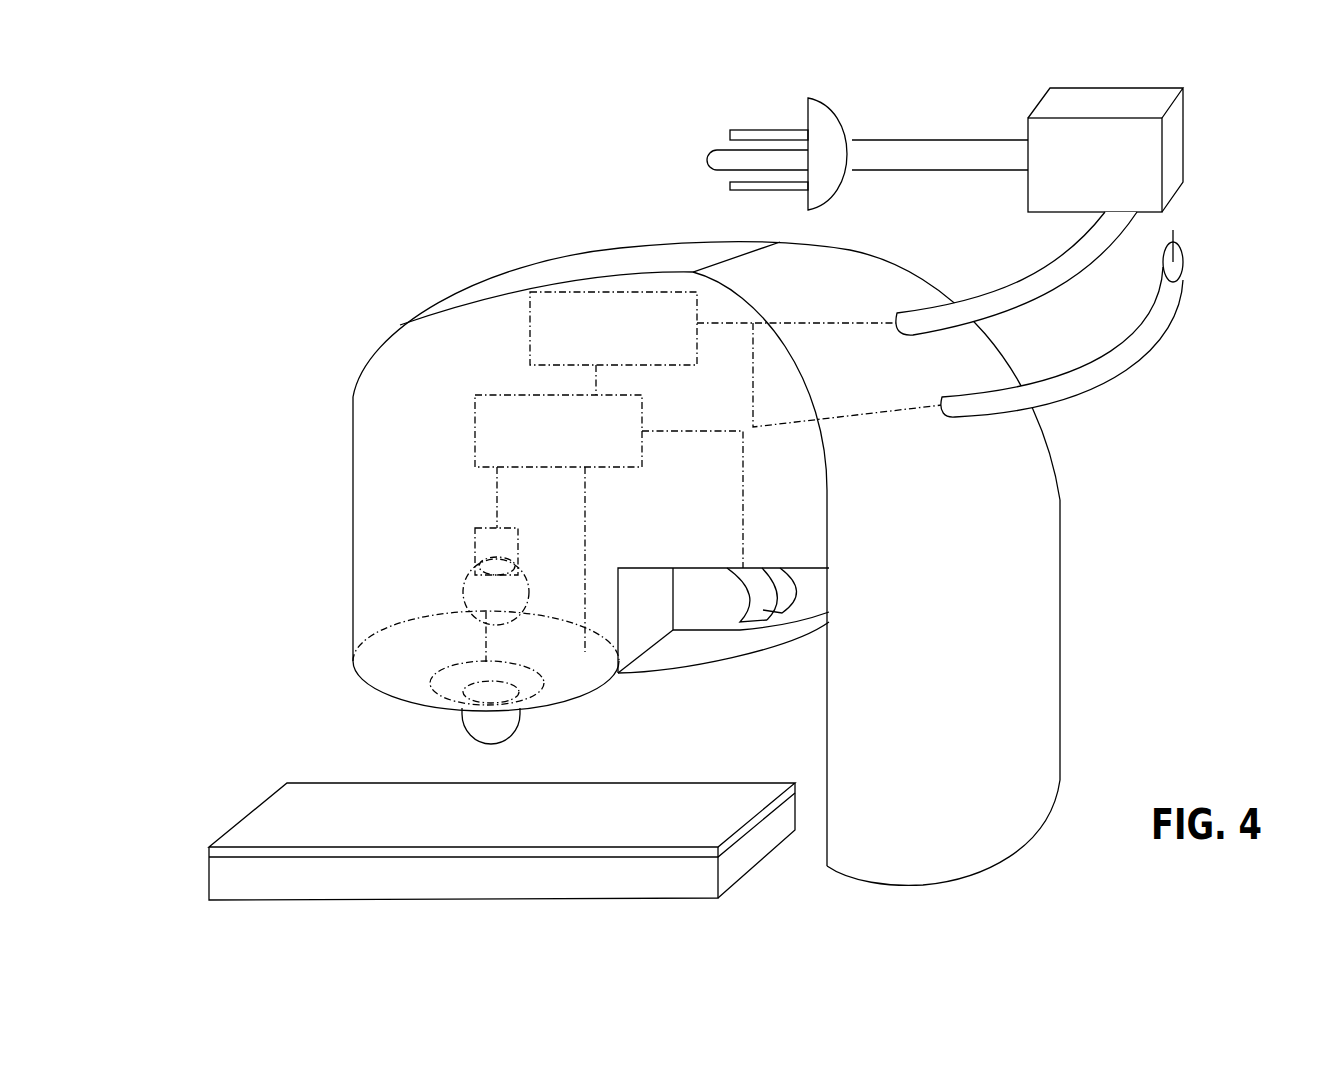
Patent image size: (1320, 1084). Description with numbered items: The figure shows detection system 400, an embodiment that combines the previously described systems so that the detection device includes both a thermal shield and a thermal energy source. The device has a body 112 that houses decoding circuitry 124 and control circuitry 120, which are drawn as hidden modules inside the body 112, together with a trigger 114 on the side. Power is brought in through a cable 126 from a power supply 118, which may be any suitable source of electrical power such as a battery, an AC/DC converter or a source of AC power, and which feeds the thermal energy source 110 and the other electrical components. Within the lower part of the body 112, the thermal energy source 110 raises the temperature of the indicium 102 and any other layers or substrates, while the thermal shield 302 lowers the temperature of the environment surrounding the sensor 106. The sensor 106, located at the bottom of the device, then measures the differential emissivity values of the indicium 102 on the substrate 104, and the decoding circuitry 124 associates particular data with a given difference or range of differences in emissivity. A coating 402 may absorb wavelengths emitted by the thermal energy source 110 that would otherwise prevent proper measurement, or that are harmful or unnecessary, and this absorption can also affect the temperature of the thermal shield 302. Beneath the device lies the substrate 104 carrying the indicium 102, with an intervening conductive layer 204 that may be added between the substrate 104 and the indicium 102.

The detection system 400 is at (777, 98).
The indicium 102 is at (395, 790).
The substrate 104 is at (430, 888).
The conductive layer 204 is at (287, 837).
The sensor 106 is at (507, 723).
The thermal energy source 110 is at (497, 570).
The body 112 is at (432, 363).
The trigger 114 is at (763, 610).
The power supply 118 is at (1118, 150).
The control circuitry 120 is at (522, 410).
The decoding circuitry 124 is at (573, 313).
The cable 126 is at (1127, 347).
The thermal shield 302 is at (375, 682).
The coating 402 is at (387, 660).